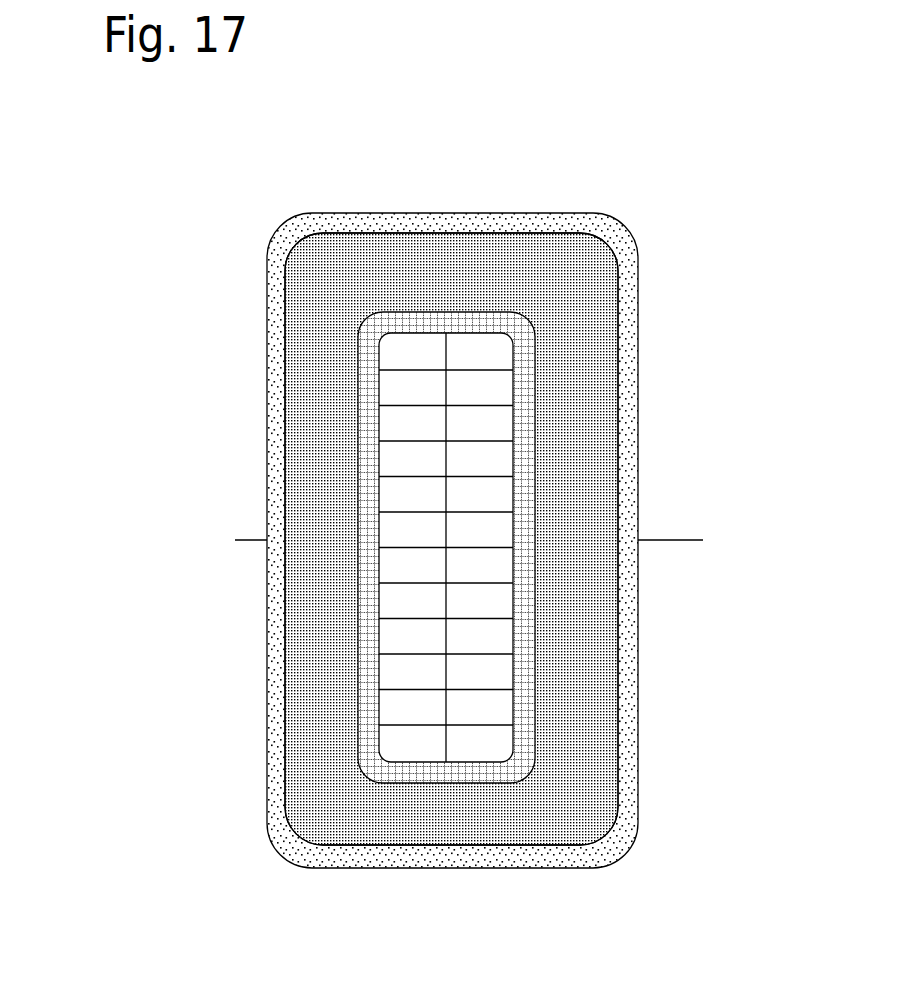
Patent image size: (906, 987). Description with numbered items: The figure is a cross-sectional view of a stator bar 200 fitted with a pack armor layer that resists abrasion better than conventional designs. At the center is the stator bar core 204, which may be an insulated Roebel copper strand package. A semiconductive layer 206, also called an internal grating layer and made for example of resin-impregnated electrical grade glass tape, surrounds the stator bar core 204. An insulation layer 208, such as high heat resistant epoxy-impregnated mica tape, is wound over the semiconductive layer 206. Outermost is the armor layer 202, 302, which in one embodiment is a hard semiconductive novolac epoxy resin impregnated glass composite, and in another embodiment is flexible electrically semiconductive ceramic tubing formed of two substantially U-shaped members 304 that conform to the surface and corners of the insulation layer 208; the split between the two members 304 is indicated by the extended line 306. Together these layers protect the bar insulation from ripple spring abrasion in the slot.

The stator bar 200 is at (422, 513).
The armor layer 202 is at (348, 540).
The armor layer 302 is at (283, 258).
The stator bar core 204 is at (422, 540).
The semiconductive layer 206 is at (372, 487).
The insulation layer 208 is at (327, 368).
The U-shaped tubing member 304 is at (410, 540).
The extended line 306 is at (665, 538).